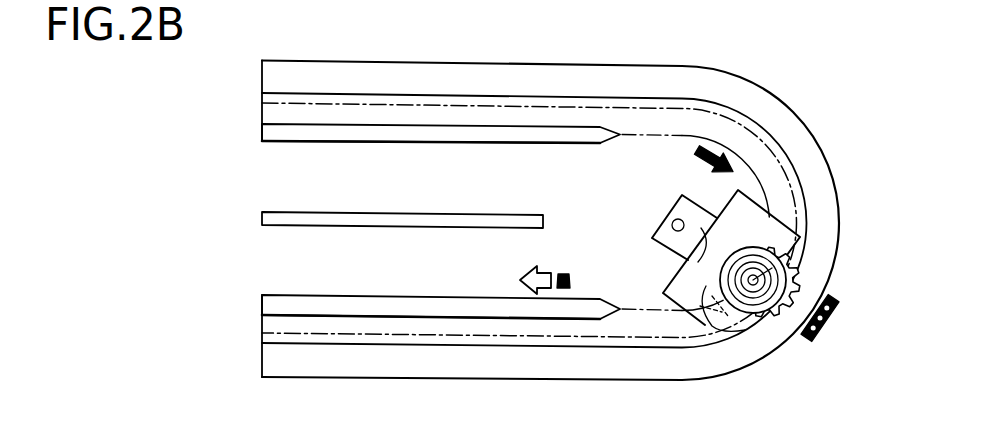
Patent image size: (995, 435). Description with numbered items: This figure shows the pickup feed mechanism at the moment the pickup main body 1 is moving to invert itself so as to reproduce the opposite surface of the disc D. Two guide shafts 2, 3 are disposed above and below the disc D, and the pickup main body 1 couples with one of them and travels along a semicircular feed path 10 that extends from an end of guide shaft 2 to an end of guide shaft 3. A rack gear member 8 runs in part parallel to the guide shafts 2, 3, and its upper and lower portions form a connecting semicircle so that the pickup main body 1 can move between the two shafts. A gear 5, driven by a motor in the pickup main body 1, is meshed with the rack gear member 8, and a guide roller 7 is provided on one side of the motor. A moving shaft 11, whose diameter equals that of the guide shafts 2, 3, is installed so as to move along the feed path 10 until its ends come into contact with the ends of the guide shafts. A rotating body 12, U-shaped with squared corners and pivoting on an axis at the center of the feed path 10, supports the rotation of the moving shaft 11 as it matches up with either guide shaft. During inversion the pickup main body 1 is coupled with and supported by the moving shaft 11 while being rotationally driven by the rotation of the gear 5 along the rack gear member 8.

The pickup main body 1 is at (672, 273).
The guide shaft 2 is at (343, 141).
The guide shaft 3 is at (335, 299).
The gear 5 is at (700, 300).
The guide roller 7 is at (752, 307).
The rack gear member 8 is at (803, 138).
The feed path 10 is at (716, 142).
The moving shaft 11 is at (795, 237).
The rotating body 12 is at (657, 230).
The disc D is at (473, 222).